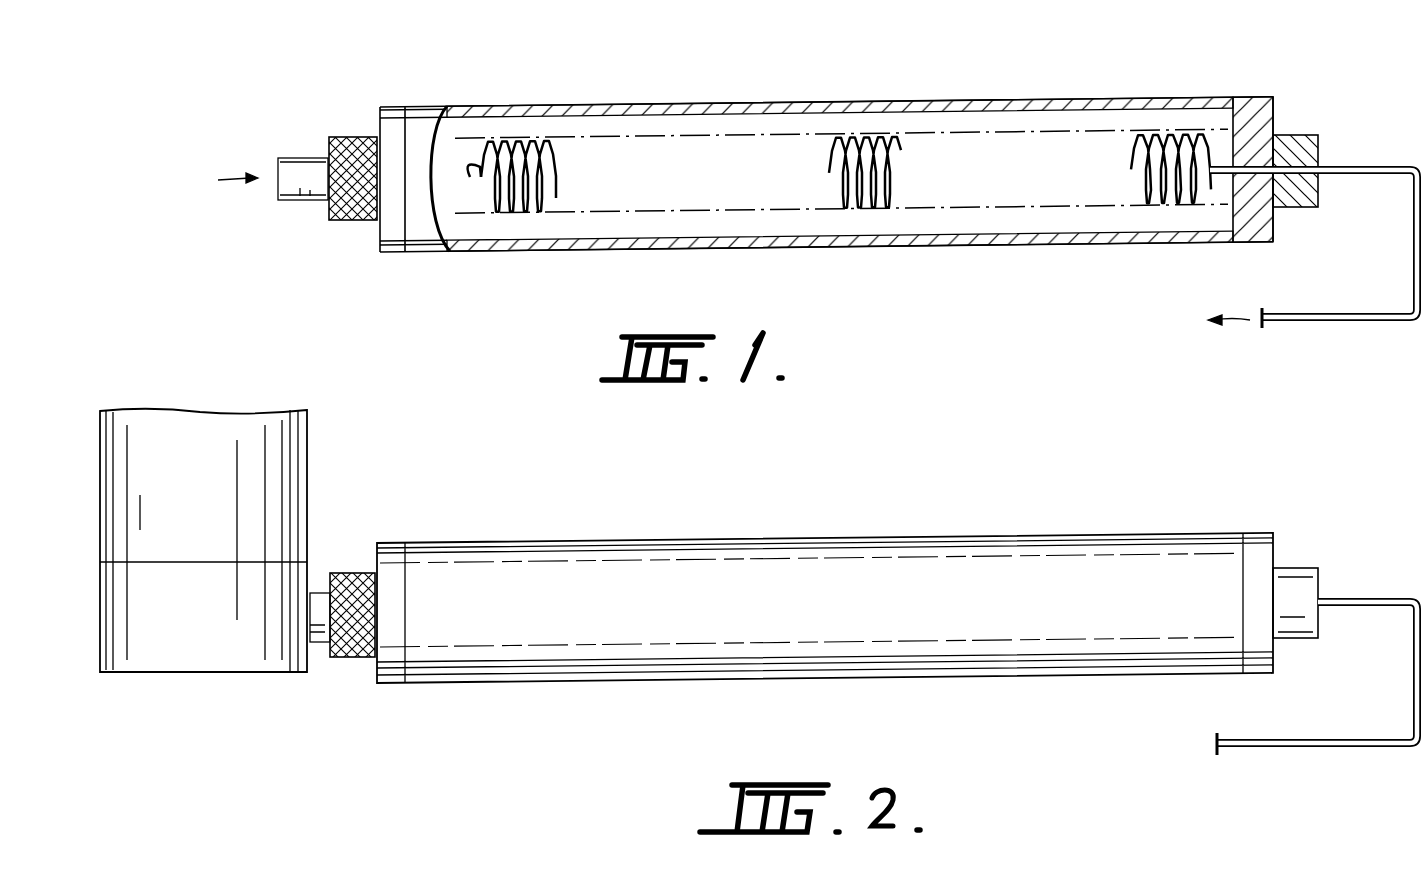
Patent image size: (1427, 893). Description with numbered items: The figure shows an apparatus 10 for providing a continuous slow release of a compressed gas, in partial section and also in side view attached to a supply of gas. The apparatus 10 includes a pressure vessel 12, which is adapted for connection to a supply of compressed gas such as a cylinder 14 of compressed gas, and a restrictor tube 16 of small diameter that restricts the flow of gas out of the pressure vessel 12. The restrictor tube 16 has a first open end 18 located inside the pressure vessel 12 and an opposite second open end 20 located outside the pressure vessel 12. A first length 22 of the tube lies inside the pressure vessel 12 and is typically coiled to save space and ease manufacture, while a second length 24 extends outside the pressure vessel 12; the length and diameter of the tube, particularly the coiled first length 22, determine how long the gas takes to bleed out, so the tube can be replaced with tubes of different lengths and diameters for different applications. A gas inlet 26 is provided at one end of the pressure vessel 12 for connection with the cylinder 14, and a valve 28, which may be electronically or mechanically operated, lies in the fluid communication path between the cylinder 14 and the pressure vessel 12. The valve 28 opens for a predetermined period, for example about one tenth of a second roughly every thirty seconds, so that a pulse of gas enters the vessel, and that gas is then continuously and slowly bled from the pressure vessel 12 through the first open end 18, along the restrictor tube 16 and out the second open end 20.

In FIG. 1, the apparatus 10 is at (1018, 88).
In FIG. 2, the apparatus 10 is at (925, 525).
In FIG. 1, the pressure vessel 12 is at (617, 113).
In FIG. 2, the pressure vessel 12 is at (573, 583).
In FIG. 2, the cylinder 14 is at (298, 460).
In FIG. 1, the restrictor tube 16 is at (836, 152).
In FIG. 1, the first open end 18 is at (473, 157).
In FIG. 1, the second open end 20 is at (1282, 325).
In FIG. 2, the second open end 20 is at (1258, 748).
In FIG. 1, the first length 22 is at (965, 230).
In FIG. 1, the second length 24 is at (1377, 168).
In FIG. 2, the second length 24 is at (1358, 602).
In FIG. 1, the gas inlet 26 is at (299, 172).
In FIG. 2, the gas inlet 26 is at (318, 645).
In FIG. 1, the valve 28 is at (349, 150).
In FIG. 2, the valve 28 is at (352, 572).